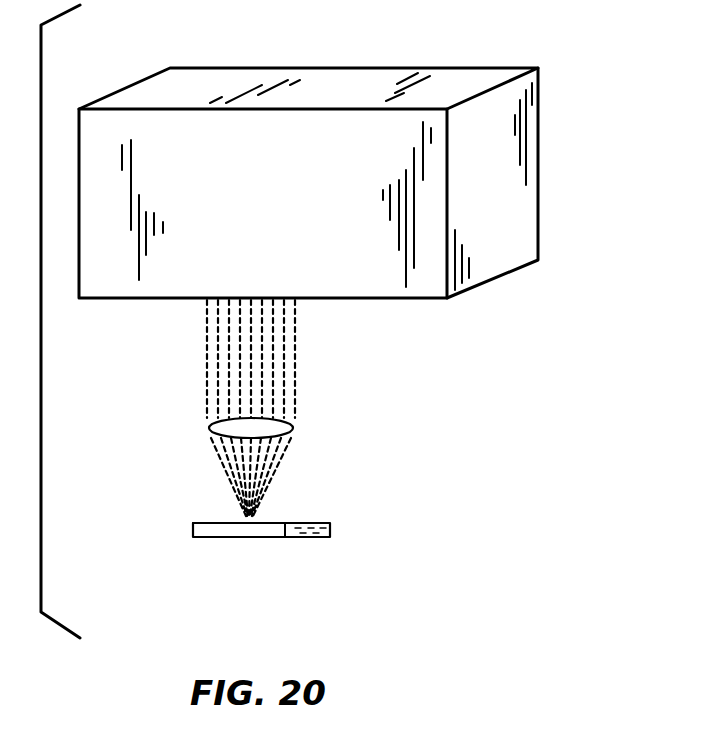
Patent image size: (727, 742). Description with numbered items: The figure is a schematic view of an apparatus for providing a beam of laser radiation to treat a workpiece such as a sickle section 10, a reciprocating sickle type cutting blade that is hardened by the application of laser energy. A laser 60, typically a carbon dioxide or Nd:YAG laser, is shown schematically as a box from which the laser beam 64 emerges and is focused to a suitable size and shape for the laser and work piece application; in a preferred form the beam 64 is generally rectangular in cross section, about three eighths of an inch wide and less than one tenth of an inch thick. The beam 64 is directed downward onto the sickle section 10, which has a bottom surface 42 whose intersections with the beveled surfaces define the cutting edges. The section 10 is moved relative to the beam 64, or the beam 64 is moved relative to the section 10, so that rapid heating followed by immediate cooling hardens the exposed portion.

The laser 60 is at (517, 223).
The laser beam 64 is at (312, 390).
The sickle section 10 is at (335, 531).
The bottom surface 42 is at (205, 523).